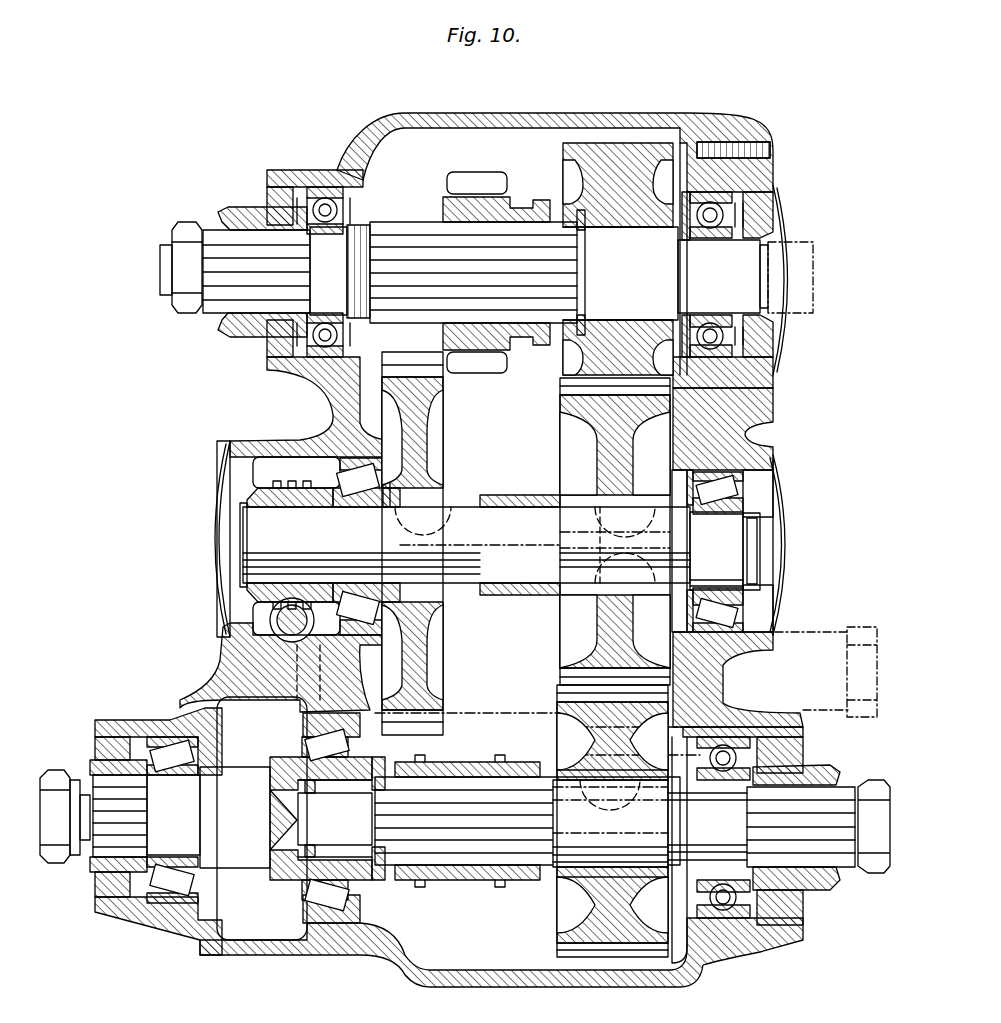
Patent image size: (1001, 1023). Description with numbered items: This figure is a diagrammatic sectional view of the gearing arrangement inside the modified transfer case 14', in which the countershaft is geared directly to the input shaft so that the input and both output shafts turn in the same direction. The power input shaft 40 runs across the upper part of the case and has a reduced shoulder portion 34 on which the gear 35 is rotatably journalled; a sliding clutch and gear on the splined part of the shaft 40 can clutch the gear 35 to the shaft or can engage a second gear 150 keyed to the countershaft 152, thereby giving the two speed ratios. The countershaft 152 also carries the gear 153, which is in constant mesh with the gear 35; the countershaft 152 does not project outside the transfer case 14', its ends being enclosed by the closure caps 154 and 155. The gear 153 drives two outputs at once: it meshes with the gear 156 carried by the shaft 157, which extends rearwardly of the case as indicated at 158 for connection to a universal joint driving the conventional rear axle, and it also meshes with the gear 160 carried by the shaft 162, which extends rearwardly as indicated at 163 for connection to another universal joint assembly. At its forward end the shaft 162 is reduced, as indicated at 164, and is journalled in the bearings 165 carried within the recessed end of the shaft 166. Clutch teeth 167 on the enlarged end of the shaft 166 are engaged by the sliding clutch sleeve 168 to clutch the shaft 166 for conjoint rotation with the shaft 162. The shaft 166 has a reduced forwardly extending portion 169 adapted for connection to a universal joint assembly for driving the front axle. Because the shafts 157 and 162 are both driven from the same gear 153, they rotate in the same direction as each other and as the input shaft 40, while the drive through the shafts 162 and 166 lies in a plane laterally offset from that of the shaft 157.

The transfer case 14' is at (467, 538).
The gear 35 is at (625, 160).
The power input shaft 40 is at (410, 222).
The reduced shoulder portion 34 is at (590, 240).
The second gear 150 is at (418, 422).
The gear 153 is at (600, 460).
The countershaft 152 is at (495, 515).
The gear 156 is at (570, 530).
The closure cap 154 is at (212, 525).
The closure cap 155 is at (790, 547).
The rearward extension of shaft 157 158 is at (808, 630).
The reduced forwardly extending portion 169 is at (112, 778).
The bearings 165 is at (305, 750).
The shaft 166 is at (242, 768).
The reduced forward end 164 is at (300, 812).
The clutch teeth 167 is at (400, 758).
The shaft 157 is at (522, 712).
The gear 160 is at (585, 722).
The sliding clutch sleeve 168 is at (460, 880).
The shaft 162 is at (488, 850).
The rearward extension of shaft 162 163 is at (810, 855).